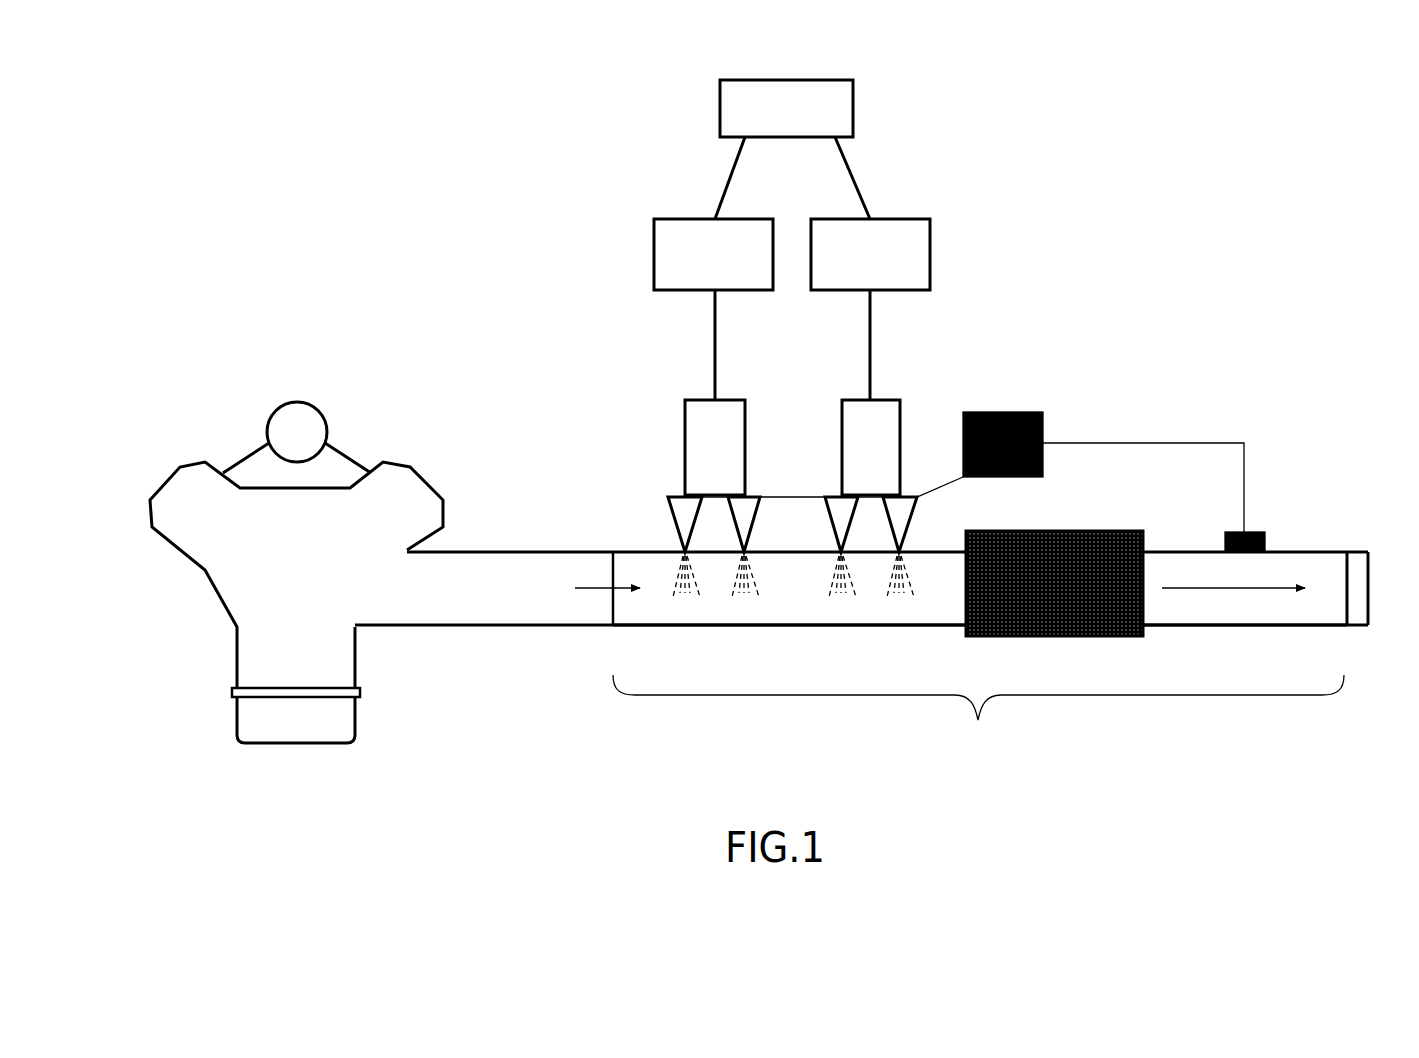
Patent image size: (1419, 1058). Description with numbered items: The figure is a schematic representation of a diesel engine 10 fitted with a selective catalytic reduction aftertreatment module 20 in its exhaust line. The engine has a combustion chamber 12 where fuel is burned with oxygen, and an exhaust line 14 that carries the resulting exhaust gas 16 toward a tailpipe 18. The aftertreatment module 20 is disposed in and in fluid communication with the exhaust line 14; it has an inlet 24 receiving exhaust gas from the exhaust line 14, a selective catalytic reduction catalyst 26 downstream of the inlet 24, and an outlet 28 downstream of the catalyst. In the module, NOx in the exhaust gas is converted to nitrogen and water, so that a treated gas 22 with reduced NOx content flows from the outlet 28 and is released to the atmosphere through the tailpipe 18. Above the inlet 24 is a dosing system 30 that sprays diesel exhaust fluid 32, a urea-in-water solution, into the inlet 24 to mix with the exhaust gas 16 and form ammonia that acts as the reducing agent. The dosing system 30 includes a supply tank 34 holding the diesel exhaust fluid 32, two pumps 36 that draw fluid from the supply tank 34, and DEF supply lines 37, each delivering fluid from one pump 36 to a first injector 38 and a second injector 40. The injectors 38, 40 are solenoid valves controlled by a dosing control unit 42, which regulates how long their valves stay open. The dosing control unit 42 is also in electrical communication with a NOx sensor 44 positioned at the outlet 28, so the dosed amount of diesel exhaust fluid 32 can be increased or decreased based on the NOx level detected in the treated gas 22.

The diesel engine 10 is at (370, 230).
The combustion chamber 12 is at (410, 502).
The exhaust line 14 is at (502, 550).
The exhaust gas 16 is at (595, 590).
The tailpipe 18 is at (1358, 552).
The selective catalytic reduction aftertreatment module 20 is at (978, 712).
The treated gas 22 is at (1258, 588).
The inlet 24 is at (718, 626).
The selective catalytic reduction catalyst 26 is at (1053, 637).
The outlet 28 is at (1255, 627).
The dosing system 30 is at (958, 157).
The diesel exhaust fluid 32 is at (700, 590).
The supply tank 34 is at (855, 104).
The pump 36 is at (654, 253).
The DEF supply line 37 is at (751, 353).
The first injector 38 is at (668, 497).
The second injector 40 is at (747, 496).
The dosing control unit 42 is at (1003, 412).
The NOx sensor 44 is at (1252, 532).